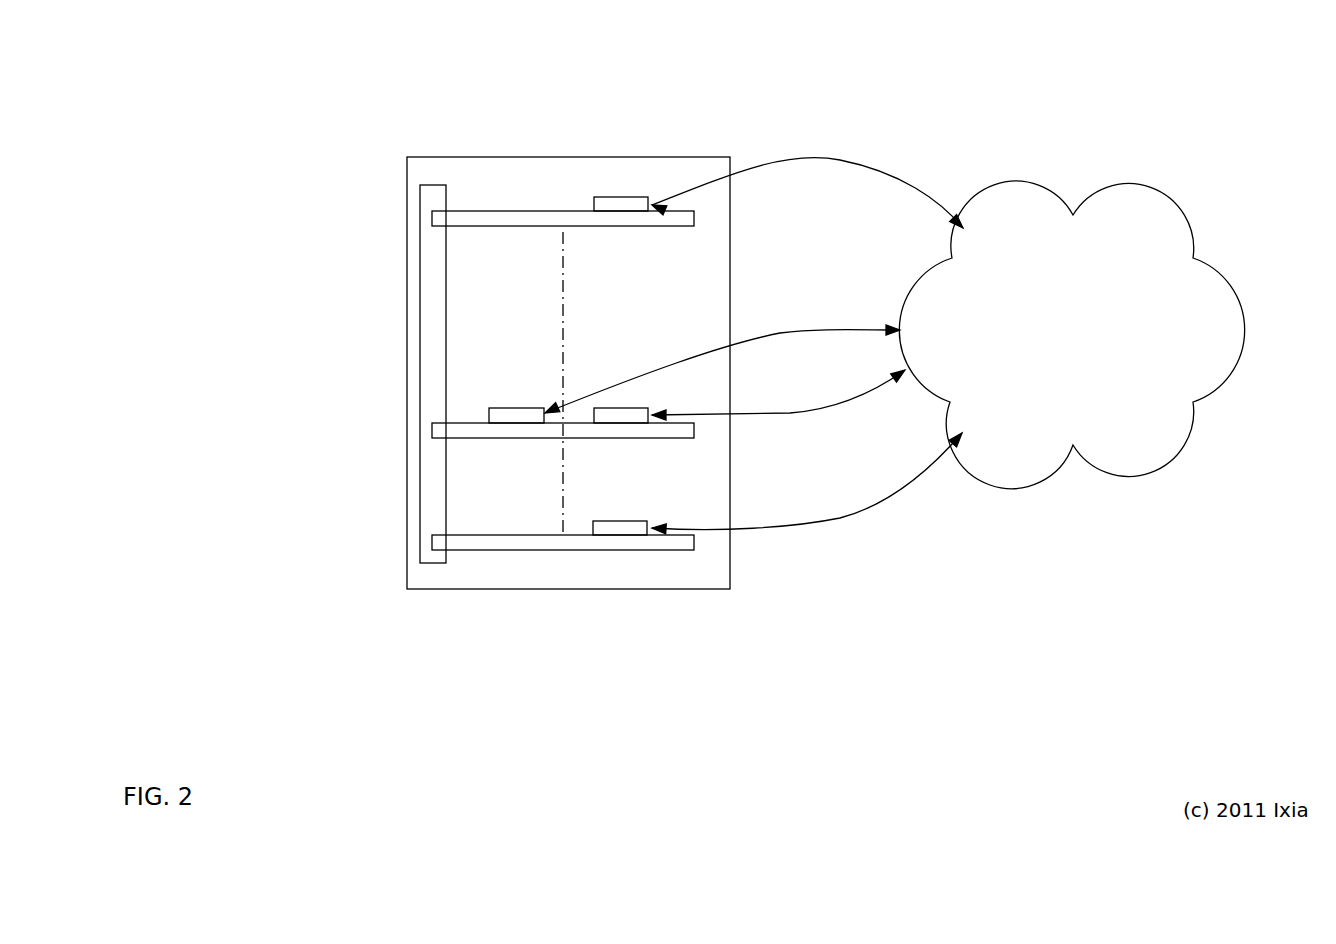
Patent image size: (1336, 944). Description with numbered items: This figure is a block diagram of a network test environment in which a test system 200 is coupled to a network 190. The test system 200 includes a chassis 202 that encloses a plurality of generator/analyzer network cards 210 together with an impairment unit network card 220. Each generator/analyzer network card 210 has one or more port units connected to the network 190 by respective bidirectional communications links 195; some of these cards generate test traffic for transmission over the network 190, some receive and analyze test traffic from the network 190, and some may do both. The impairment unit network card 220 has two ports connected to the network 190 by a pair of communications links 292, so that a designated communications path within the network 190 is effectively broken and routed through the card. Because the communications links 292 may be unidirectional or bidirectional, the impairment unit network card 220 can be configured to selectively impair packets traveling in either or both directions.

The test system 200 is at (470, 68).
The chassis 202 is at (627, 157).
The generator/analyzer network card 210 is at (473, 211).
The impairment unit network card 220 is at (473, 423).
The network 190 is at (1071, 335).
The bidirectional communications link 195 is at (858, 162).
The communications link 292 is at (794, 412).